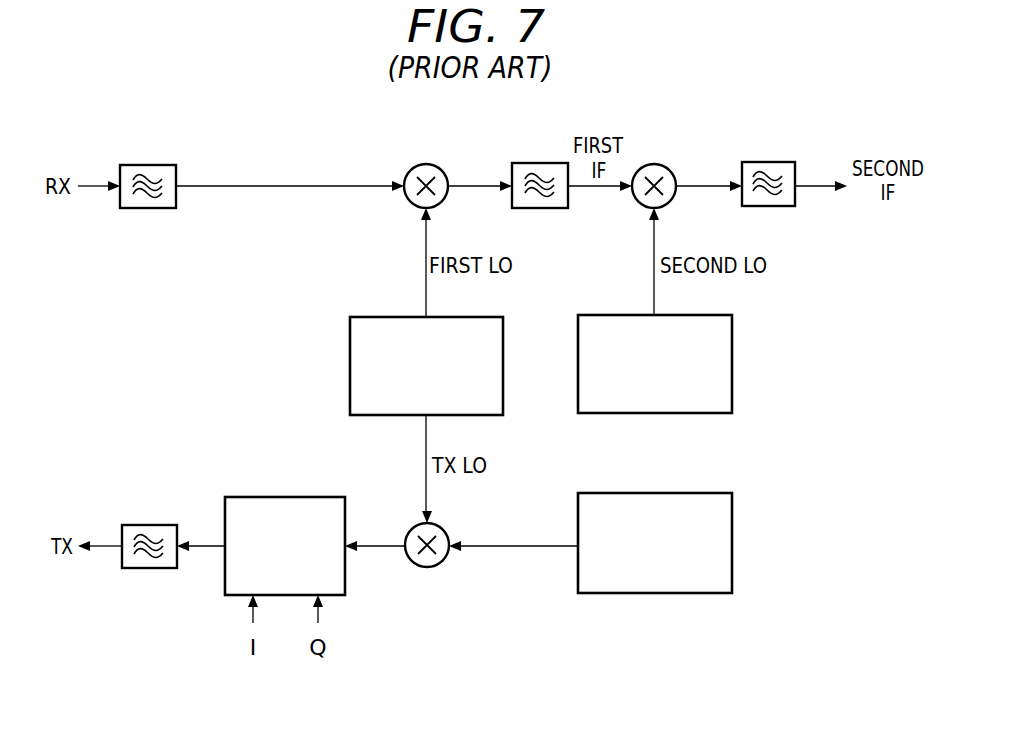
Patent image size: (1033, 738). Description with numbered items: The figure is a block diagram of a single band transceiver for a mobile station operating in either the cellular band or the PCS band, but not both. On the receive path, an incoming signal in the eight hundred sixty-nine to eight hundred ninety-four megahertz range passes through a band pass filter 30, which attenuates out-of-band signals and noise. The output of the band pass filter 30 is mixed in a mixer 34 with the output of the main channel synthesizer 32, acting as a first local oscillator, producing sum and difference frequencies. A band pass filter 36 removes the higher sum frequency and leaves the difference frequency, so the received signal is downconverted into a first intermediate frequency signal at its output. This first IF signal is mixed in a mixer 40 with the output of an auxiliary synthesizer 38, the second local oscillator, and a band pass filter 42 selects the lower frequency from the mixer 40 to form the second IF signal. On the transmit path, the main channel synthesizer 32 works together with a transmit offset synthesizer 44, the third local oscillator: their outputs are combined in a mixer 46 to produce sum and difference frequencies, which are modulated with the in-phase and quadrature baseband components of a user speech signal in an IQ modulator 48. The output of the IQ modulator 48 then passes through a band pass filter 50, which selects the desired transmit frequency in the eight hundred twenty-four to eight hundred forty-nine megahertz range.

The band pass filter 30 is at (147, 165).
The main channel synthesizer 32 is at (350, 365).
The mixer 34 is at (421, 165).
The band pass filter 36 is at (533, 163).
The auxiliary synthesizer 38 is at (733, 362).
The mixer 40 is at (658, 165).
The band pass filter 42 is at (768, 162).
The transmit offset synthesizer 44 is at (733, 546).
The mixer 46 is at (432, 567).
The IQ modulator 48 is at (272, 497).
The band pass filter 50 is at (148, 568).